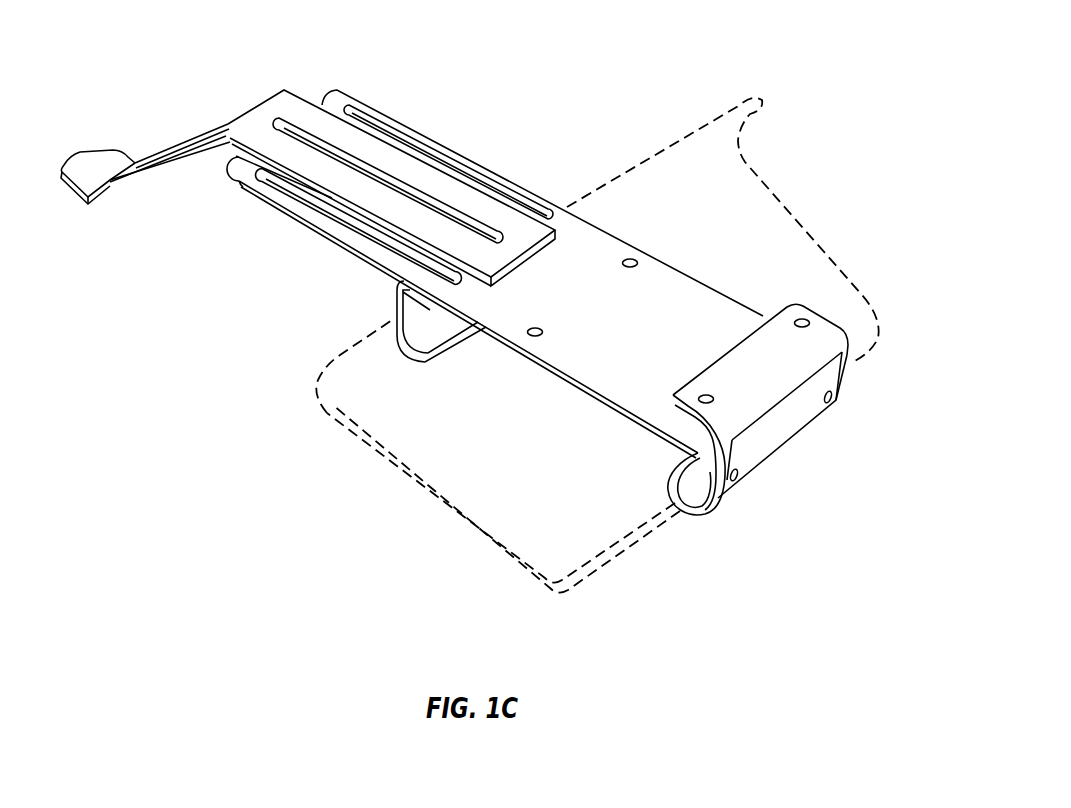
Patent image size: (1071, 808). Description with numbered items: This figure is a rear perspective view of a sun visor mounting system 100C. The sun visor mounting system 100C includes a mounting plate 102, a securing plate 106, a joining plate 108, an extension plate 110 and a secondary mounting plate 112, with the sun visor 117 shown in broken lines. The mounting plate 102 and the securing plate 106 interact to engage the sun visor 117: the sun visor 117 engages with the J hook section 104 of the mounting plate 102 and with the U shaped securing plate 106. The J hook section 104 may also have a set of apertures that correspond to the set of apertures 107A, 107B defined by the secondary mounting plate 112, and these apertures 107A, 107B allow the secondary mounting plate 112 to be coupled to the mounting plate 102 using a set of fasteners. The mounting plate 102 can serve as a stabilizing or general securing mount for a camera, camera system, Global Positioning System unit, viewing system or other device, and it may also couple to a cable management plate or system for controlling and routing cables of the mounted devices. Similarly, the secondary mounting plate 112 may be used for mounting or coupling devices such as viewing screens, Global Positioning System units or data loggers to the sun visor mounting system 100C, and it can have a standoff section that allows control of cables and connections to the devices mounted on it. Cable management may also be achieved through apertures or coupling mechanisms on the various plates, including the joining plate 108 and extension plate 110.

The sun visor mounting system 100C is at (156, 44).
The mounting plate 102 is at (662, 300).
The J hook section 104 is at (660, 486).
The securing plate 106 is at (396, 349).
The aperture 107A is at (746, 490).
The aperture 107B is at (838, 410).
The joining plate 108 is at (287, 100).
The extension plate 110 is at (88, 202).
The secondary mounting plate 112 is at (817, 352).
The sun visor 117 is at (400, 478).